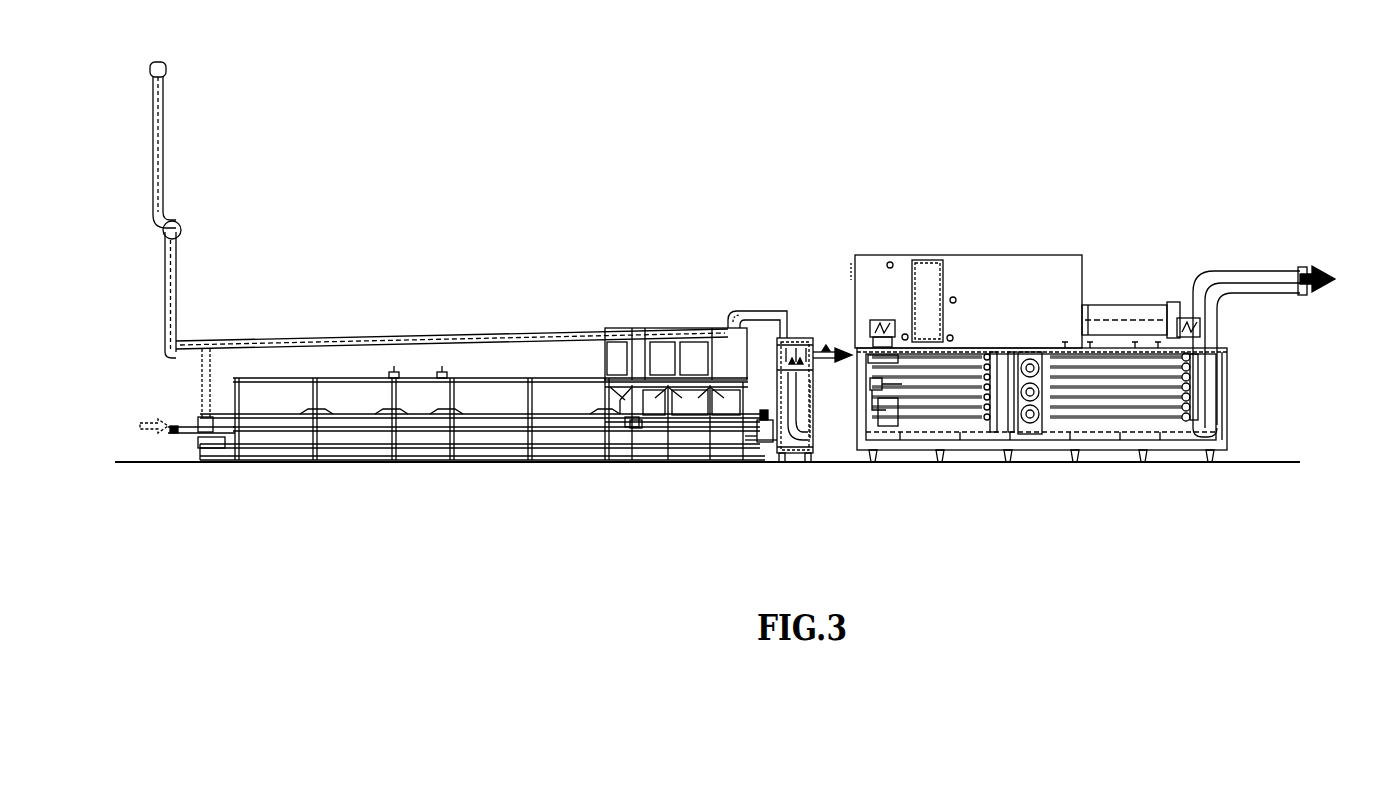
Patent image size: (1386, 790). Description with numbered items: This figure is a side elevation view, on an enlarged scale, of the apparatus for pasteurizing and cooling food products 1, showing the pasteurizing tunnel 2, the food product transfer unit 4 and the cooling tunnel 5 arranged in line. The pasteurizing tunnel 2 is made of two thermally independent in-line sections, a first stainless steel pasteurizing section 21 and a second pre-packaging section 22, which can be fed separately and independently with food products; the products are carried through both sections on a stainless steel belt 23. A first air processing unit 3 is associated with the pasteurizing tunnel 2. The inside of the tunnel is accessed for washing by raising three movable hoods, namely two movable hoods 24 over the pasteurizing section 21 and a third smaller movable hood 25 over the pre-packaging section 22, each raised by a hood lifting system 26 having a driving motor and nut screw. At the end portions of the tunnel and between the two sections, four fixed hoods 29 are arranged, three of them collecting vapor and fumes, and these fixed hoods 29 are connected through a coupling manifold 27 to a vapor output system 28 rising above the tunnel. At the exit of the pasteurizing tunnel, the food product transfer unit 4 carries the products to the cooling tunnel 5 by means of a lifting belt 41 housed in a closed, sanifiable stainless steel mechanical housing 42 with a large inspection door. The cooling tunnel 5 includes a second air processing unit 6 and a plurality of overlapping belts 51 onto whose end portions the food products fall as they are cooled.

The apparatus for pasteurizing and cooling food products 1 is at (882, 98).
The pasteurizing tunnel 2 is at (466, 285).
The first air processing unit 3 is at (660, 352).
The food product transfer unit 4 is at (802, 326).
The cooling tunnel 5 is at (1121, 245).
The second air processing unit 6 is at (993, 258).
The pasteurizing section 21 is at (488, 440).
The pre-packaging section 22 is at (695, 412).
The stainless steel belt 23 is at (272, 425).
The movable hoods 24 is at (372, 415).
The third smaller movable hood 25 is at (680, 413).
The hood lifting system 26 is at (440, 375).
The coupling manifold 27 is at (267, 338).
The vapor output system 28 is at (180, 230).
The fixed hoods 29 is at (203, 417).
The lifting belt 41 is at (792, 440).
The mechanical housing 42 is at (815, 425).
The overlapping belts 51 is at (950, 410).